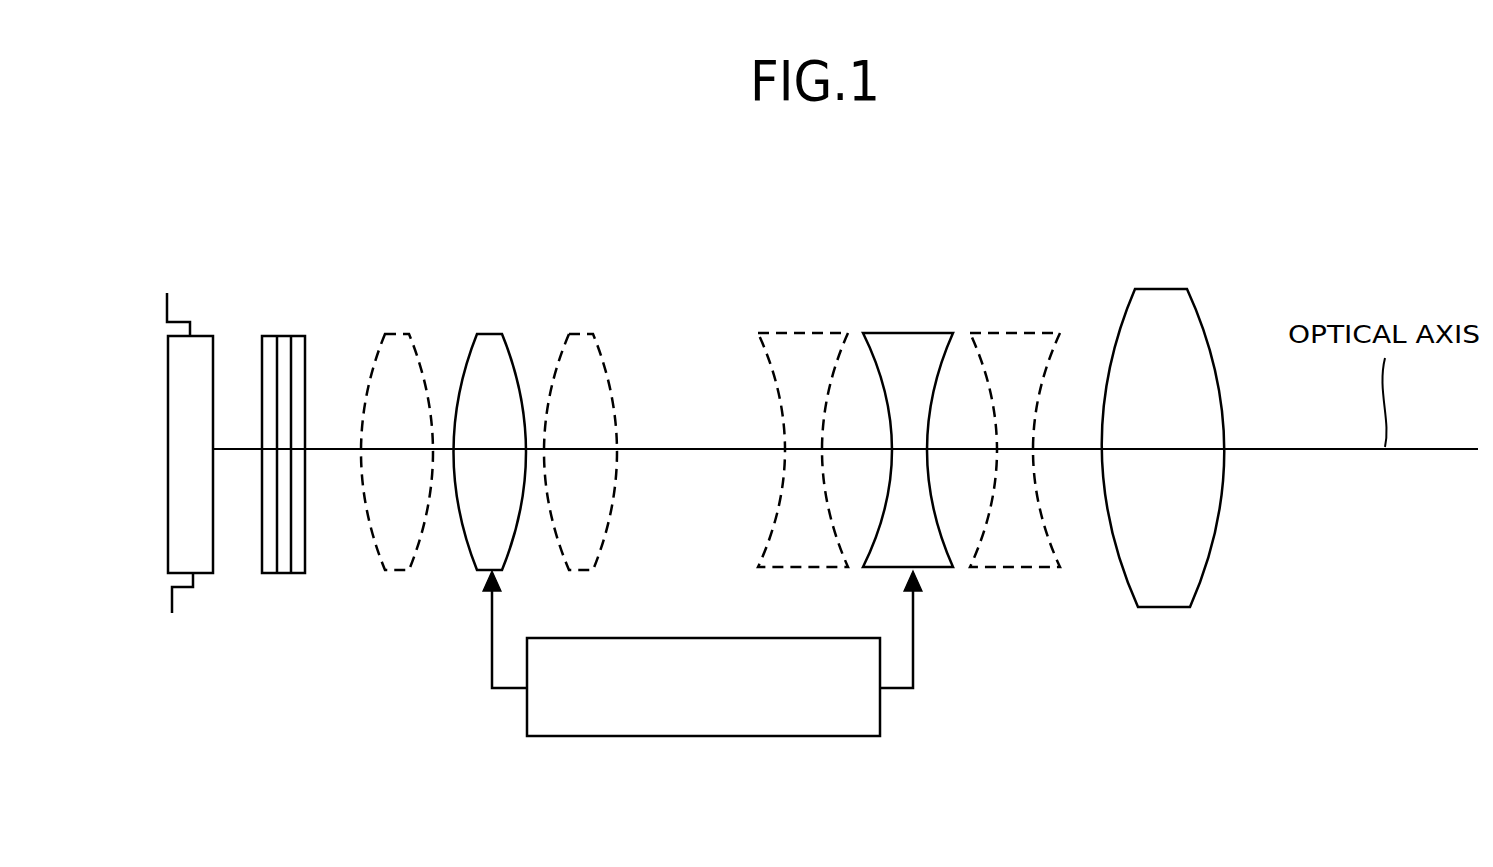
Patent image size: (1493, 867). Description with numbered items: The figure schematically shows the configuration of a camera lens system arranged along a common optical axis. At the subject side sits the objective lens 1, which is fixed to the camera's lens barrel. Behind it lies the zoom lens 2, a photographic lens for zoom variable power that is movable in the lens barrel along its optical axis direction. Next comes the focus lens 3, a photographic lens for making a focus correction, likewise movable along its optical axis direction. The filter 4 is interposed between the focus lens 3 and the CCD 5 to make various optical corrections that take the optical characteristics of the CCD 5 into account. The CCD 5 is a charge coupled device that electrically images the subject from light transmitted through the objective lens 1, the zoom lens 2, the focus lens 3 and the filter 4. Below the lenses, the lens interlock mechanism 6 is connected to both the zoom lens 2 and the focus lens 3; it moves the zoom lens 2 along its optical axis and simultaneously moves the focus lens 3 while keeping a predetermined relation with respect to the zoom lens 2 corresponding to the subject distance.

The objective lens 1 is at (1160, 289).
The zoom lens 2 is at (907, 333).
The focus lens 3 is at (490, 334).
The filter 4 is at (283, 336).
The CCD 5 is at (203, 336).
The lens interlock mechanism 6 is at (839, 645).